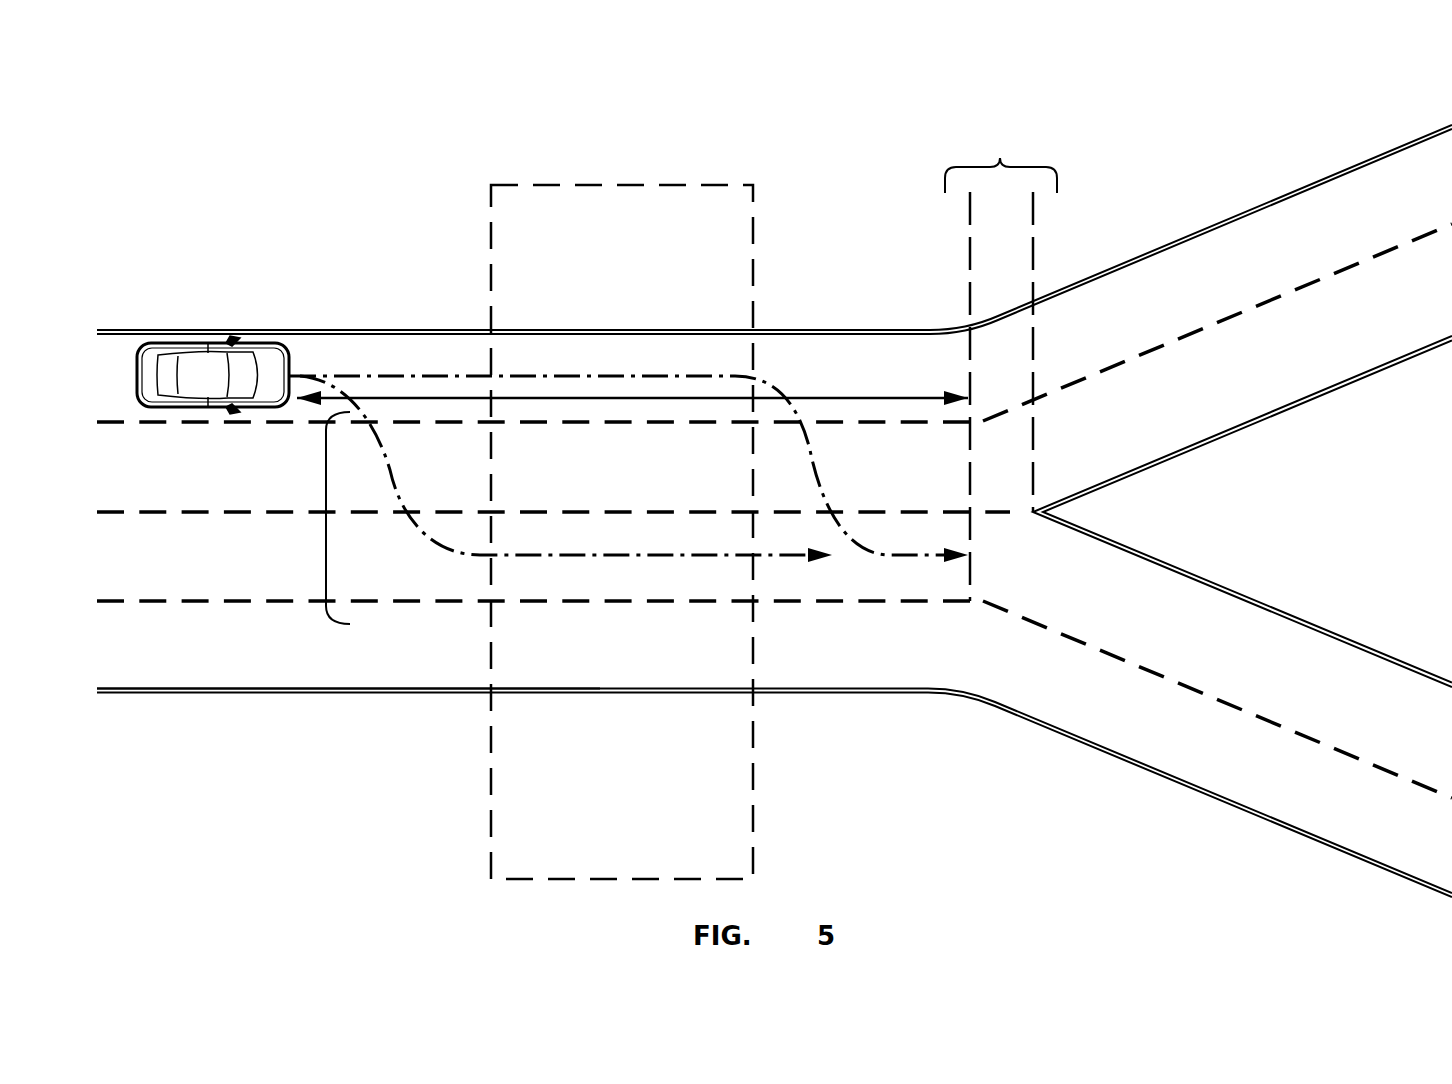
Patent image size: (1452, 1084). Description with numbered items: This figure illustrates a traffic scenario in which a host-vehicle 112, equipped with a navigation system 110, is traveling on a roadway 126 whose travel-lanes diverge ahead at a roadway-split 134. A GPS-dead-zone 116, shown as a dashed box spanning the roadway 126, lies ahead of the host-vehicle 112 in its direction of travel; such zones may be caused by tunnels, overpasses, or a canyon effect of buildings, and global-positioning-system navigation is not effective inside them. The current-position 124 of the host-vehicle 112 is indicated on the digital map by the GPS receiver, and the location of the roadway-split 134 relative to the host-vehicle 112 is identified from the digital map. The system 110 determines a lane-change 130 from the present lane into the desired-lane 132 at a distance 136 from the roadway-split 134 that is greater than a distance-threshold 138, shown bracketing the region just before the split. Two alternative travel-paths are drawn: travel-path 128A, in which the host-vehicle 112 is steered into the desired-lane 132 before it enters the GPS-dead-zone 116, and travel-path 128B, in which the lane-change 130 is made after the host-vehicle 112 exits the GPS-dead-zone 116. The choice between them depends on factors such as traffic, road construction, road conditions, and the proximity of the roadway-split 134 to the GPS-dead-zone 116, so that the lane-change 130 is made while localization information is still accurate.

The navigation system 110 is at (213, 352).
The host-vehicle 112 is at (215, 343).
The GPS-dead-zone 116 is at (503, 199).
The current-position 124 is at (174, 315).
The roadway 126 is at (234, 660).
The travel-path 128A is at (433, 543).
The travel-path 128B is at (768, 388).
The lane-change 130 is at (326, 519).
The desired-lane 132 is at (905, 580).
The roadway-split 134 is at (1098, 510).
The distance 136 is at (859, 395).
The distance-threshold 138 is at (1000, 158).